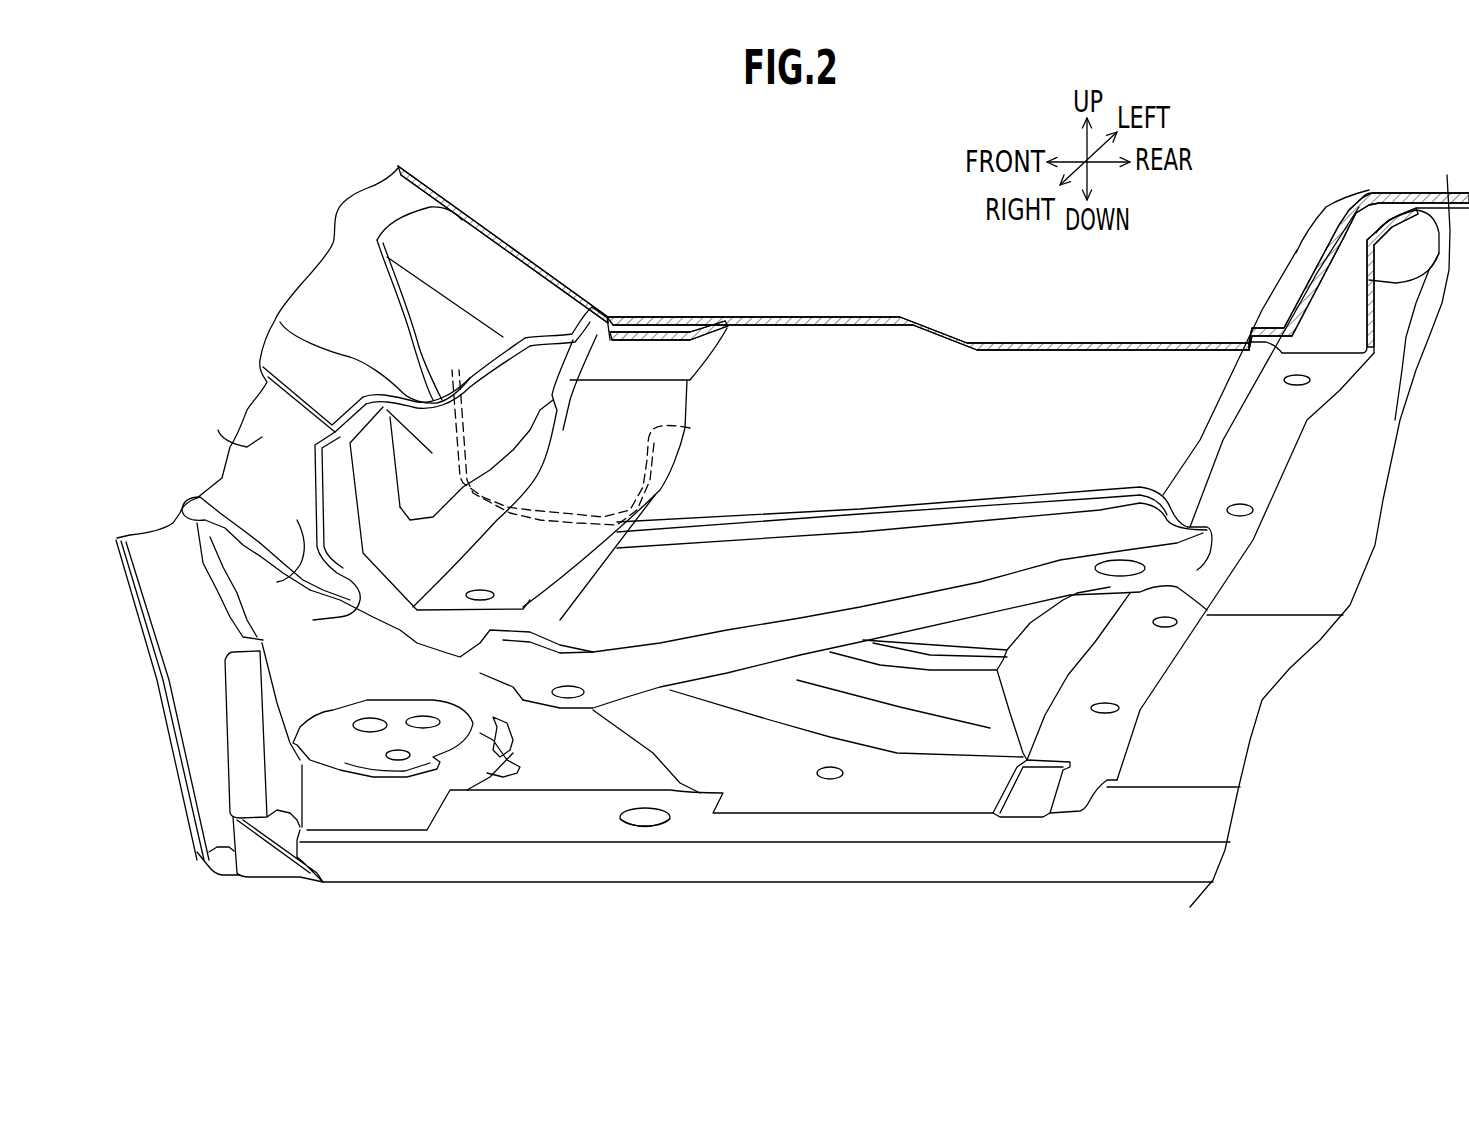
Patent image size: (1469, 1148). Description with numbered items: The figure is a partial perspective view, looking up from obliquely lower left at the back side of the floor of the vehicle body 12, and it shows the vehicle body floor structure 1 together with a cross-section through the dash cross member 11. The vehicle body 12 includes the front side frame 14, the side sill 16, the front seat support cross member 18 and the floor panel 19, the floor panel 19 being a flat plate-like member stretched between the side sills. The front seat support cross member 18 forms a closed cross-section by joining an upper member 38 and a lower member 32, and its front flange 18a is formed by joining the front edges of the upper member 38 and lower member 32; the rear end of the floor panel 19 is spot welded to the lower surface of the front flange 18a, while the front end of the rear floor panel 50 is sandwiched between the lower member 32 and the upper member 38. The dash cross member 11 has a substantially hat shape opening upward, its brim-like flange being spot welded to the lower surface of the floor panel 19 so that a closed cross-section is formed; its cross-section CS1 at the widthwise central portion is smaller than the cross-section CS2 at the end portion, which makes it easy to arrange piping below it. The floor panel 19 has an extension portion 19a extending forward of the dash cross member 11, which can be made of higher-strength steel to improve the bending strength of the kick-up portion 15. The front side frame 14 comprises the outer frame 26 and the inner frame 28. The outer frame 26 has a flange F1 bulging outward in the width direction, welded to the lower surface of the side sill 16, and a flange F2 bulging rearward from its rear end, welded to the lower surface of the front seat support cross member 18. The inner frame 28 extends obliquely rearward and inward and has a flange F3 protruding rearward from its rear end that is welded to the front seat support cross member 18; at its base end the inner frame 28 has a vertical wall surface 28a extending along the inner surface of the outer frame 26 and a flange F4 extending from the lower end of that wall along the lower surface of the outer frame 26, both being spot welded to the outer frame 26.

The vehicle body floor structure 1 is at (1021, 844).
The dash cross member 11 is at (297, 357).
The vehicle body 12 is at (850, 170).
The front side frame 14 is at (218, 430).
The kick-up portion 15 is at (617, 302).
The side sill 16 is at (567, 870).
The front seat support cross member 18 is at (1248, 489).
The front flange 18a is at (1254, 316).
The floor panel 19 is at (877, 340).
The extension portion 19a is at (480, 277).
The outer frame 26 is at (805, 753).
The inner frame 28 is at (947, 543).
The vertical wall surface 28a is at (290, 576).
The lower member 32 is at (1432, 230).
The upper member 38 is at (1297, 253).
The floor panel at rear portion 50 is at (1436, 277).
The cross-section at central portion CS1 is at (693, 315).
The cross-section at end portion CS2 is at (700, 478).
The flange F1 is at (742, 807).
The flange F2 is at (1038, 797).
The flange F3 is at (1180, 560).
The flange F4 is at (290, 628).